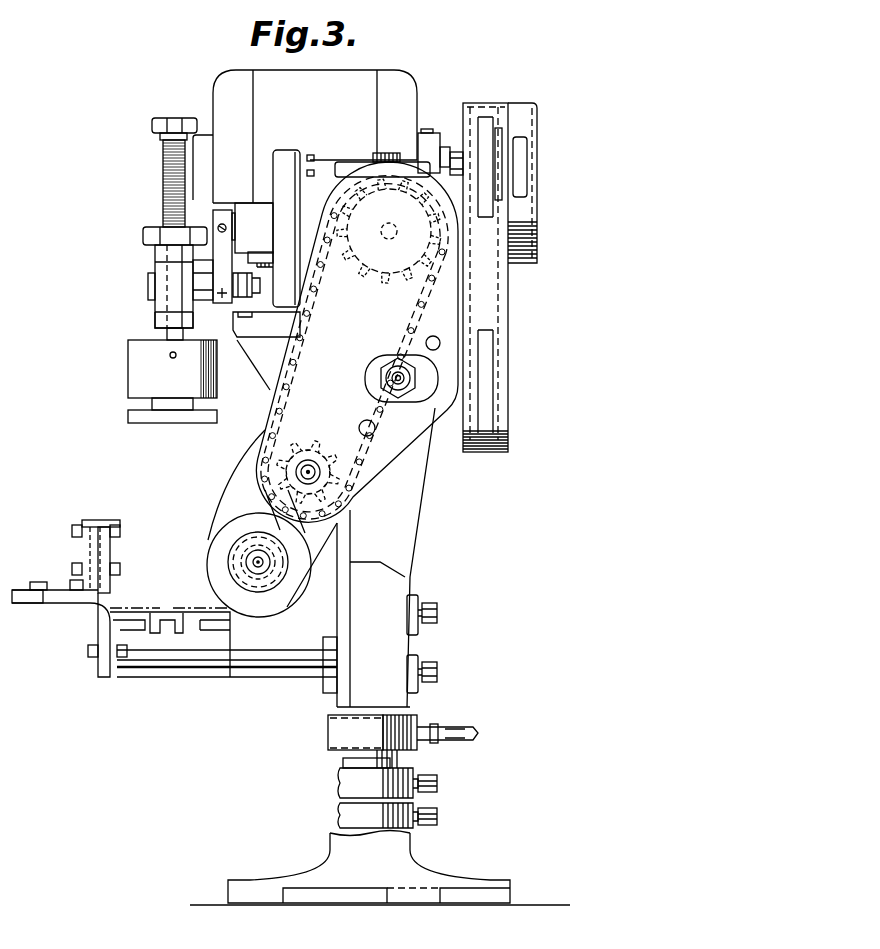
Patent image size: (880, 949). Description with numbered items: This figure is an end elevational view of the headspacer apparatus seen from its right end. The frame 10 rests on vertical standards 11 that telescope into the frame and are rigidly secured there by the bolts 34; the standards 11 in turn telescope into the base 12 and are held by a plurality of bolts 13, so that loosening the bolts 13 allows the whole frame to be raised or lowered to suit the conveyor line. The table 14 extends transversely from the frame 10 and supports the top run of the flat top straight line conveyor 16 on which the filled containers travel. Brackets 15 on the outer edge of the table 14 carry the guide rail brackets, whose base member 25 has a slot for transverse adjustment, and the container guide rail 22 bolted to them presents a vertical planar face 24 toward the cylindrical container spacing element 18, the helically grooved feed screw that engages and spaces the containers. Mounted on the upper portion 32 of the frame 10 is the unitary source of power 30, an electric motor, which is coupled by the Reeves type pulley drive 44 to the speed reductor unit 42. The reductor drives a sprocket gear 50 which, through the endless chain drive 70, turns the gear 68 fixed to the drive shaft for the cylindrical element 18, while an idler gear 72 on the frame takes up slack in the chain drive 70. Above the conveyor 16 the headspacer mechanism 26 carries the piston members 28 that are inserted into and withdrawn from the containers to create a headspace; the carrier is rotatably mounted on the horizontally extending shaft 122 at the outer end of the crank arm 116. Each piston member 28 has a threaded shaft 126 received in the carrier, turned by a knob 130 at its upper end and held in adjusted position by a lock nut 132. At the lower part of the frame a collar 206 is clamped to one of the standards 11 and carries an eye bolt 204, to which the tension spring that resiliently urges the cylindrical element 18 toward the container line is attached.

The frame 10 is at (420, 702).
The vertical standards 11 is at (398, 763).
The base 12 is at (413, 845).
The bolts 13 is at (435, 813).
The table 14 is at (159, 681).
The brackets 15 is at (65, 618).
The straight line conveyor 16 is at (118, 628).
The cylindrical container spacing element 18 is at (207, 537).
The container guide rail 22 is at (92, 513).
The vertical planar face 24 is at (121, 568).
The base member 25 is at (60, 588).
The headspacer mechanism 26 is at (143, 310).
The piston members 28 is at (120, 358).
The unitary source of power 30 is at (414, 90).
The upper portion of the frame 32 is at (426, 500).
The bolts 34 is at (440, 611).
The speed reductor unit 42 is at (430, 156).
The pulley drive 44 is at (503, 131).
The sprocket gear 50 is at (376, 275).
The gear 68 is at (317, 448).
The endless chain drive 70 is at (311, 349).
The idler gear 72 is at (409, 362).
The crank arm 116 is at (220, 300).
The horizontally extending shaft 122 is at (150, 283).
The threaded shaft 126 is at (164, 188).
The knob 130 is at (152, 124).
The lock nut 132 is at (143, 236).
The eye bolt 204 is at (474, 732).
The collar 206 is at (326, 737).